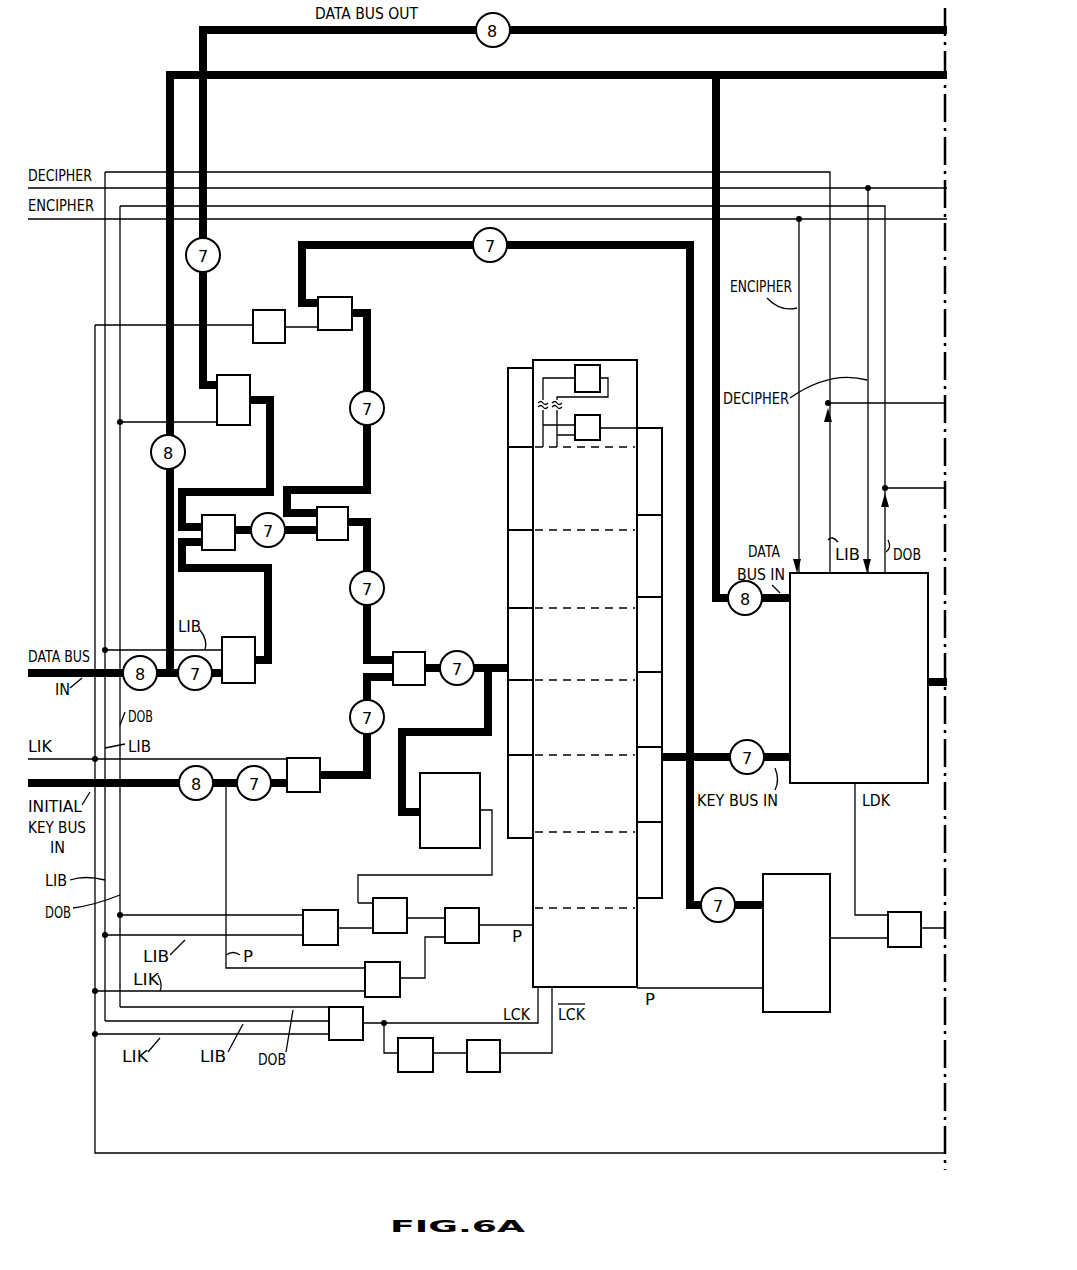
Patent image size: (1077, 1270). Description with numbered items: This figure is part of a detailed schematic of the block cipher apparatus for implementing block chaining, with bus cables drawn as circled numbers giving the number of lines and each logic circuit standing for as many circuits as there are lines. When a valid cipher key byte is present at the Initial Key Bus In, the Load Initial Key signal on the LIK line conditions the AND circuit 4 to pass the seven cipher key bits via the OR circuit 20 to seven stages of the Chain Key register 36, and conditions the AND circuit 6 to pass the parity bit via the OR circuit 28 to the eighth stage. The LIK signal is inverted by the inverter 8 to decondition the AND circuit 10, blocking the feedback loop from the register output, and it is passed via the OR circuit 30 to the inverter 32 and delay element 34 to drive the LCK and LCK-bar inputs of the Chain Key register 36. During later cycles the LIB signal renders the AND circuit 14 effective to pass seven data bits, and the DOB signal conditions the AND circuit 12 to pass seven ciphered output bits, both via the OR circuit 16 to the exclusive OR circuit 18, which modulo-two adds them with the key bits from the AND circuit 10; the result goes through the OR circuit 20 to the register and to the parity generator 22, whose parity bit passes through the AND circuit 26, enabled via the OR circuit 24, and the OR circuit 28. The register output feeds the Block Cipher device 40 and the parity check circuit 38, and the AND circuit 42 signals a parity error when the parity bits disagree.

The AND circuit 4 is at (298, 758).
The AND circuit 6 is at (385, 962).
The inverter 8 is at (263, 310).
The AND circuit 10 is at (337, 297).
The AND circuit 12 is at (250, 380).
The AND circuit 14 is at (245, 637).
The OR circuit 16 is at (225, 550).
The exclusive OR circuit 18 is at (333, 540).
The OR circuit 20 is at (400, 652).
The parity generator 22 is at (420, 838).
The OR circuit 24 is at (330, 910).
The AND circuit 26 is at (405, 906).
The OR circuit 28 is at (479, 915).
The OR circuit 30 is at (370, 1015).
The inverter 32 is at (433, 1050).
The delay element 34 is at (500, 1050).
The Chain Key register 36 is at (636, 365).
The parity check circuit 38 is at (800, 1012).
The Block Cipher device 40 is at (790, 704).
The AND circuit 42 is at (915, 912).